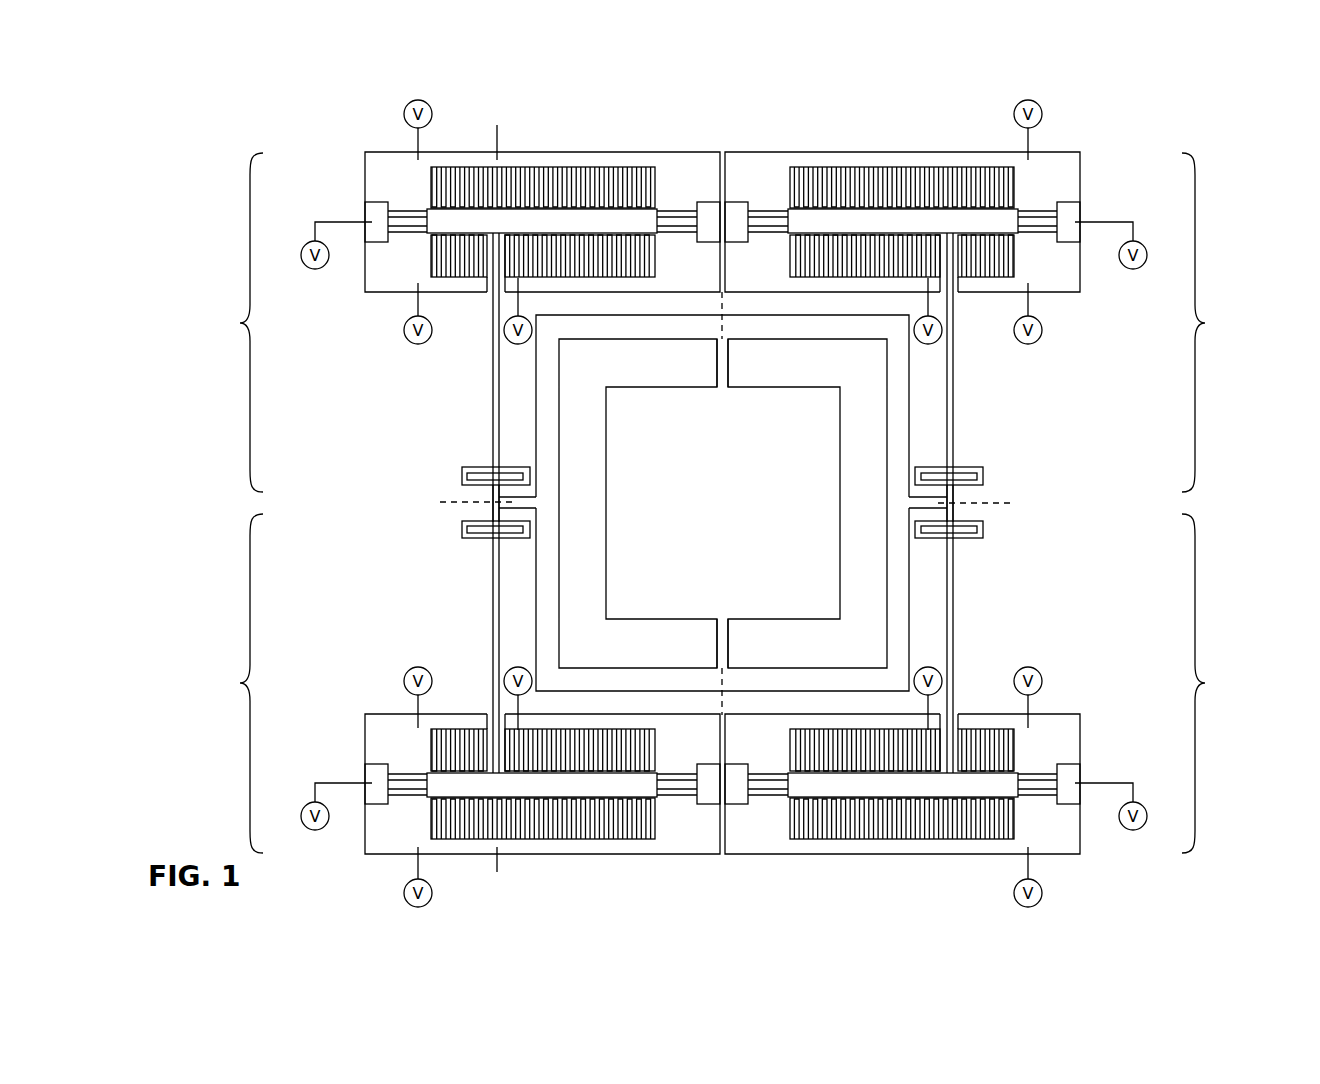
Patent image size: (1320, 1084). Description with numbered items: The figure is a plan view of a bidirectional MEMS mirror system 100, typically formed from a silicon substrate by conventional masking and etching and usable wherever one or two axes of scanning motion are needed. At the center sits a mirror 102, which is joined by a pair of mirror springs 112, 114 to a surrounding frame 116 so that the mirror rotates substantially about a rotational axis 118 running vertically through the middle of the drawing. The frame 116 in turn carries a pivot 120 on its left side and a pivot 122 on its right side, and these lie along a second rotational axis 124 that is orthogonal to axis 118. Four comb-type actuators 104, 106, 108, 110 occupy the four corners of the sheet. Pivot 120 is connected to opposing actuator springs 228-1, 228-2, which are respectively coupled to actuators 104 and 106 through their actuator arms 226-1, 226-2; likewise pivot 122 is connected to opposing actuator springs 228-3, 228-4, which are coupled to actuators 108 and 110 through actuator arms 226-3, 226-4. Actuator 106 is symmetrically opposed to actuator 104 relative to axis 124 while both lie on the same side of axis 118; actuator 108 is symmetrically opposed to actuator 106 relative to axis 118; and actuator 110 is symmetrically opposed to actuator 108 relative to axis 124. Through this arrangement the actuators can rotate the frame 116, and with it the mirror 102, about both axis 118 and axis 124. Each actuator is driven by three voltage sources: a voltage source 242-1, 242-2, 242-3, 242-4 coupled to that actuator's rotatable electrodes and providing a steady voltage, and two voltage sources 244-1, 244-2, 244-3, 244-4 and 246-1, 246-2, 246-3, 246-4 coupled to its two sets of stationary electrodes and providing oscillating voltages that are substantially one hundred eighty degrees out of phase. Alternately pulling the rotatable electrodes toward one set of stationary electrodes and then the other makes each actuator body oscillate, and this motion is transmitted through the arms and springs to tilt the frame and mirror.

The MEMS mirror system 100 is at (224, 146).
The mirror 102 is at (740, 504).
The actuator 104 is at (461, 684).
The actuator 106 is at (461, 322).
The actuator 108 is at (986, 322).
The actuator 110 is at (986, 684).
The mirror spring 112 is at (730, 644).
The mirror spring 114 is at (730, 368).
The frame 116 is at (542, 625).
The rotational axis 118 is at (727, 300).
The pivot 120 is at (515, 500).
The pivot 122 is at (932, 500).
The rotational axis 124 is at (440, 502).
The actuator arm 226-1 is at (492, 593).
The actuator arm 226-2 is at (492, 398).
The actuator arm 226-3 is at (954, 398).
The actuator arm 226-4 is at (954, 593).
The actuator spring 228-1 is at (462, 528).
The actuator spring 228-2 is at (462, 474).
The actuator spring 228-3 is at (984, 474).
The actuator spring 228-4 is at (985, 528).
The voltage source 242-1 is at (315, 830).
The voltage source 242-2 is at (315, 269).
The voltage source 242-3 is at (1133, 269).
The voltage source 242-4 is at (1133, 830).
The voltage source 244-1 is at (404, 893).
The voltage source 244-2 is at (404, 114).
The voltage source 244-3 is at (1042, 114).
The voltage source 244-4 is at (1042, 893).
The voltage source 246-1 is at (510, 670).
The voltage source 246-2 is at (515, 343).
The voltage source 246-3 is at (930, 344).
The voltage source 246-4 is at (918, 670).